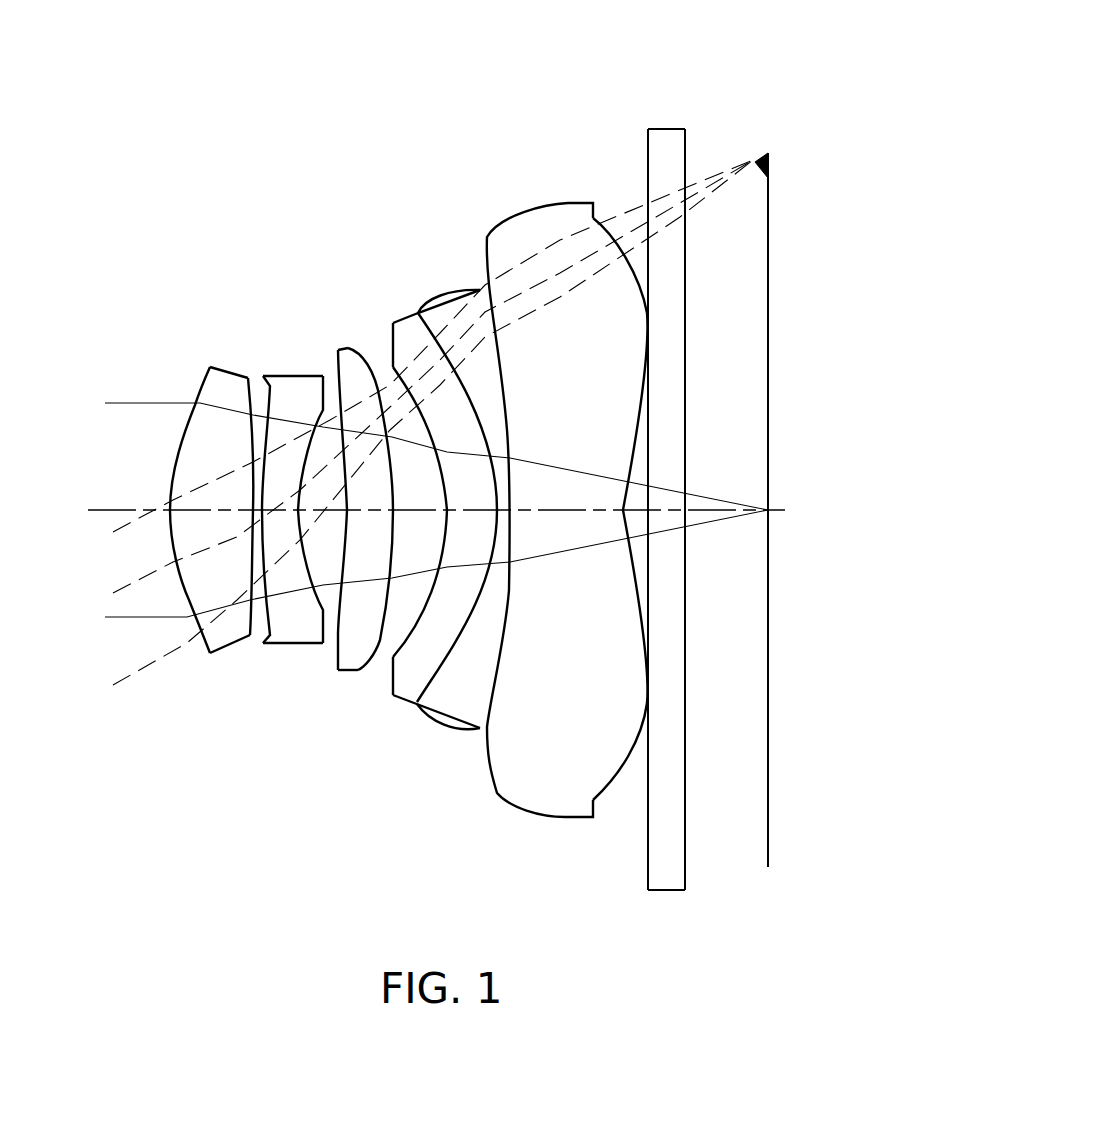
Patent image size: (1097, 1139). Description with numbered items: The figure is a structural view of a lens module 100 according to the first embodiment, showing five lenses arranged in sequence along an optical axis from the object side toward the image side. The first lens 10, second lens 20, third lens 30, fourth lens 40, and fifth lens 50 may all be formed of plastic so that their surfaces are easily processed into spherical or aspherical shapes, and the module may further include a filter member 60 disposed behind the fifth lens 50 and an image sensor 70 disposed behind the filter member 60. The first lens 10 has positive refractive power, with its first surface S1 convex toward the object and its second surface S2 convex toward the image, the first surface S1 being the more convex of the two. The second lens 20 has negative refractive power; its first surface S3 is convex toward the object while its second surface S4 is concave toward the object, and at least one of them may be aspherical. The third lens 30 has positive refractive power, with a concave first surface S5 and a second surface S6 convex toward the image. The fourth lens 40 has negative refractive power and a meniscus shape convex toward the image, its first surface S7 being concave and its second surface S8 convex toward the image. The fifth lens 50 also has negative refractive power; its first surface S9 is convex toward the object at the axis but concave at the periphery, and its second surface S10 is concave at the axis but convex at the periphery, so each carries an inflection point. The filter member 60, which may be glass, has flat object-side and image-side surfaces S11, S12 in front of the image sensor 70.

The lens module 100 is at (266, 147).
The first lens 10 is at (228, 383).
The second lens 20 is at (287, 387).
The third lens 30 is at (353, 358).
The fourth lens 40 is at (408, 328).
The fifth lens 50 is at (528, 232).
The filter member 60 is at (670, 133).
The image sensor 70 is at (762, 167).
The first surface of the first lens S1 is at (187, 603).
The second surface of the first lens S2 is at (253, 627).
The first surface of the second lens S3 is at (270, 623).
The second surface of the second lens S4 is at (315, 583).
The first surface of the third lens S5 is at (342, 575).
The second surface of the third lens S6 is at (385, 613).
The first surface of the fourth lens S7 is at (410, 652).
The second surface of the fourth lens S8 is at (452, 650).
The first surface of the fifth lens S9 is at (492, 690).
The second surface of the fifth lens S10 is at (613, 779).
The object-side surface of the filter member S11 is at (648, 678).
The image-side surface of the filter member S12 is at (685, 682).